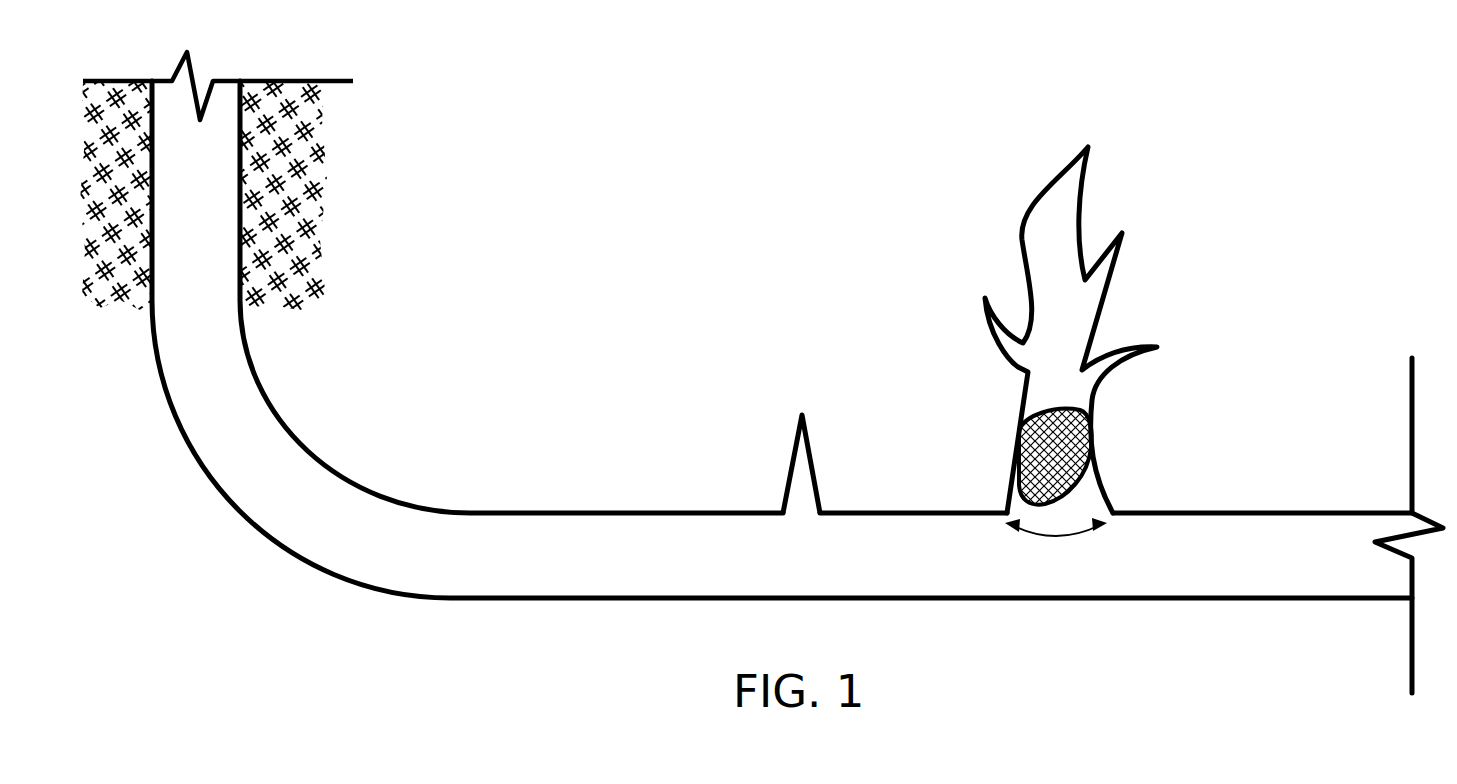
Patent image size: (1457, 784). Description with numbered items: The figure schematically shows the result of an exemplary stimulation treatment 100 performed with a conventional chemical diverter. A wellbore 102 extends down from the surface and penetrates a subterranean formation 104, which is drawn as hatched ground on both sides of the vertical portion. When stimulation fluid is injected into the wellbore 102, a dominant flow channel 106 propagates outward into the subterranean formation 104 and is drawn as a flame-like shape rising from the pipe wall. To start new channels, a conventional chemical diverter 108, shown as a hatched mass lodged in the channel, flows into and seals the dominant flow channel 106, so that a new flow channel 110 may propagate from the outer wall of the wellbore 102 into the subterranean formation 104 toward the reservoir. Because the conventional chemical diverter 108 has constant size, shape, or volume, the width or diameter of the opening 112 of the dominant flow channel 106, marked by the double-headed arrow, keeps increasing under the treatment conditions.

The stimulation treatment 100 is at (464, 121).
The wellbore 102 is at (190, 107).
The subterranean formation 104 is at (282, 178).
The dominant flow channel 106 is at (1038, 207).
The conventional chemical diverter 108 is at (1078, 448).
The new flow channel 110 is at (792, 450).
The opening 112 is at (1072, 537).